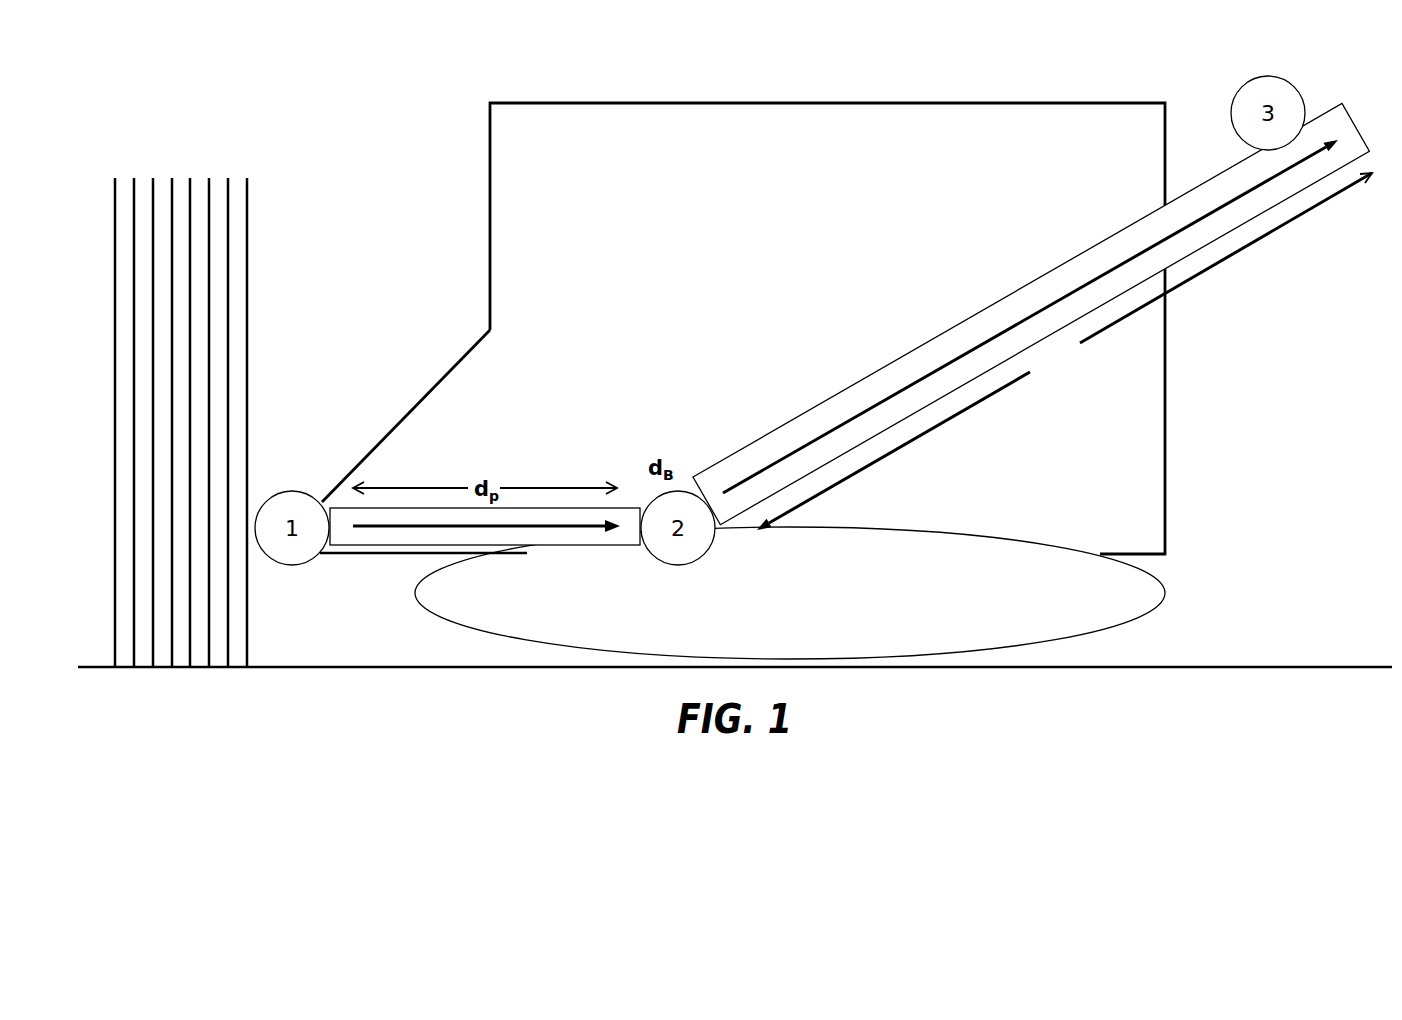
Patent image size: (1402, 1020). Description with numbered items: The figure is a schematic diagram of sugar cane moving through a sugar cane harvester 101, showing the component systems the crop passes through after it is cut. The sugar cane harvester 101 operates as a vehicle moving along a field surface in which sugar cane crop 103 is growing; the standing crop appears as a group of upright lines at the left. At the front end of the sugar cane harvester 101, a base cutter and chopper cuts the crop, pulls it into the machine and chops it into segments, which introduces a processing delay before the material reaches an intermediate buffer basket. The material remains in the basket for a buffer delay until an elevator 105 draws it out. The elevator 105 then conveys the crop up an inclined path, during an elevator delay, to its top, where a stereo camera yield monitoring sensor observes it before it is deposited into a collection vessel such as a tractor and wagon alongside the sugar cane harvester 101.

The sugar cane harvester 101 is at (487, 141).
The sugar cane crop 103 is at (217, 157).
The elevator 105 is at (867, 372).